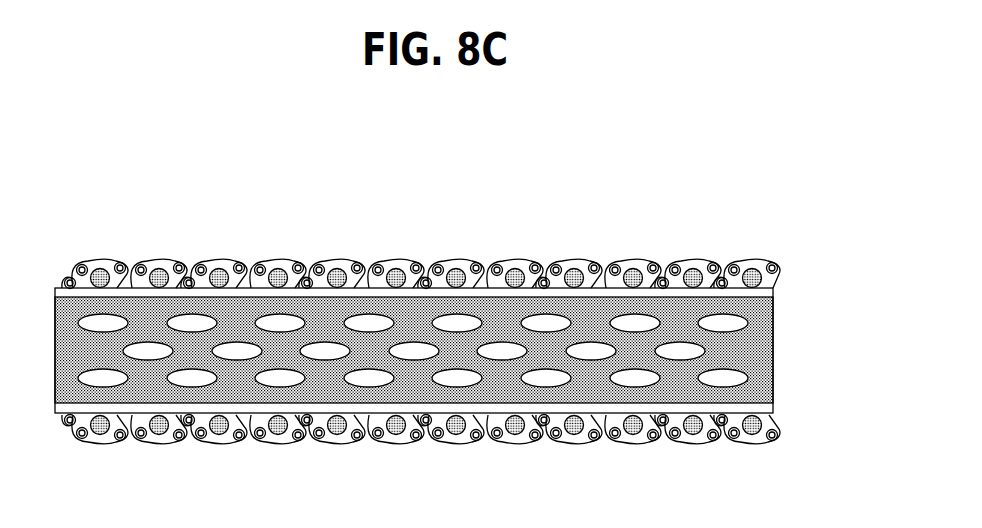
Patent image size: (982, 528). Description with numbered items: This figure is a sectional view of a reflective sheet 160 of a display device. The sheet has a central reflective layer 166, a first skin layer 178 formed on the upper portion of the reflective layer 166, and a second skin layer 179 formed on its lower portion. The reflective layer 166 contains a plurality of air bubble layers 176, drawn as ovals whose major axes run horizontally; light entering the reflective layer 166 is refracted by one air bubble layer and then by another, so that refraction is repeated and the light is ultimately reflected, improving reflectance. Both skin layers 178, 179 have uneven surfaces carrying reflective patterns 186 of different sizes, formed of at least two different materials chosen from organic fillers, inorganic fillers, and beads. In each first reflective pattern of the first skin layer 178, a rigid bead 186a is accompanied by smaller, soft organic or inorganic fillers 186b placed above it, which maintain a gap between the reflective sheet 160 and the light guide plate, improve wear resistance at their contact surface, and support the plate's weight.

The reflective sheet 160 is at (88, 142).
The reflective layer 166 is at (765, 357).
The air bubble layers 176 is at (740, 320).
The first skin layer 178 is at (461, 200).
The second skin layer 179 is at (756, 438).
The reflective patterns 186 is at (751, 198).
The bead 186a is at (752, 266).
The fillers 186b is at (721, 223).